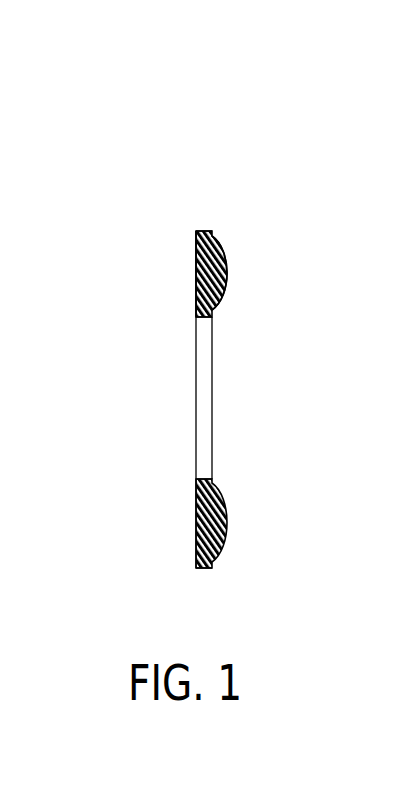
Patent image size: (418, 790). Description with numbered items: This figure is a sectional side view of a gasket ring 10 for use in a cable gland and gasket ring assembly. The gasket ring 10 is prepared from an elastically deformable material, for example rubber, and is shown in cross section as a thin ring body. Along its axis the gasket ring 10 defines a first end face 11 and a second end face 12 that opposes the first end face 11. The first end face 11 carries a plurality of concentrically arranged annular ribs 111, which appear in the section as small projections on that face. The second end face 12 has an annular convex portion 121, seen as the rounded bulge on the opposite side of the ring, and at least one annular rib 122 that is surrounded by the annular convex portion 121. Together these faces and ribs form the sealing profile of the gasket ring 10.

The gasket ring 10 is at (191, 184).
The first end face 11 is at (195, 298).
The annular ribs 111 is at (195, 260).
The second end face 12 is at (215, 238).
The annular convex portion 121 is at (227, 272).
The annular rib 122 is at (213, 485).